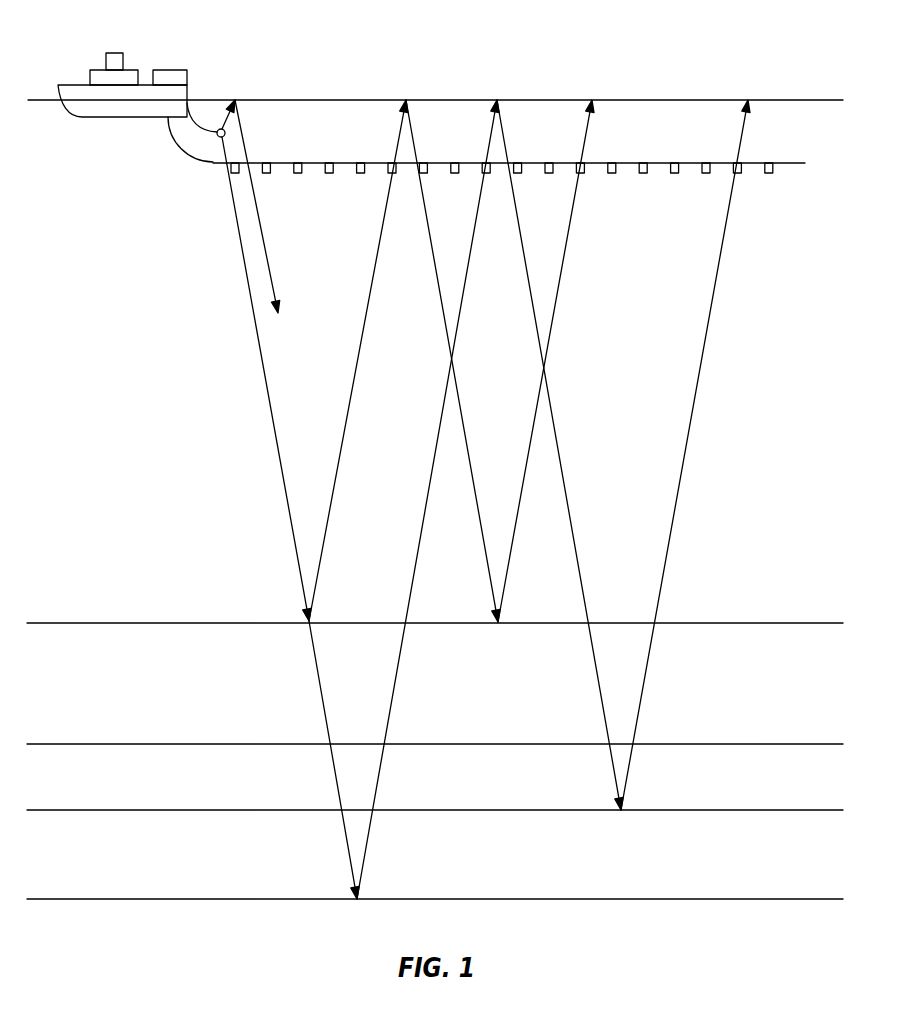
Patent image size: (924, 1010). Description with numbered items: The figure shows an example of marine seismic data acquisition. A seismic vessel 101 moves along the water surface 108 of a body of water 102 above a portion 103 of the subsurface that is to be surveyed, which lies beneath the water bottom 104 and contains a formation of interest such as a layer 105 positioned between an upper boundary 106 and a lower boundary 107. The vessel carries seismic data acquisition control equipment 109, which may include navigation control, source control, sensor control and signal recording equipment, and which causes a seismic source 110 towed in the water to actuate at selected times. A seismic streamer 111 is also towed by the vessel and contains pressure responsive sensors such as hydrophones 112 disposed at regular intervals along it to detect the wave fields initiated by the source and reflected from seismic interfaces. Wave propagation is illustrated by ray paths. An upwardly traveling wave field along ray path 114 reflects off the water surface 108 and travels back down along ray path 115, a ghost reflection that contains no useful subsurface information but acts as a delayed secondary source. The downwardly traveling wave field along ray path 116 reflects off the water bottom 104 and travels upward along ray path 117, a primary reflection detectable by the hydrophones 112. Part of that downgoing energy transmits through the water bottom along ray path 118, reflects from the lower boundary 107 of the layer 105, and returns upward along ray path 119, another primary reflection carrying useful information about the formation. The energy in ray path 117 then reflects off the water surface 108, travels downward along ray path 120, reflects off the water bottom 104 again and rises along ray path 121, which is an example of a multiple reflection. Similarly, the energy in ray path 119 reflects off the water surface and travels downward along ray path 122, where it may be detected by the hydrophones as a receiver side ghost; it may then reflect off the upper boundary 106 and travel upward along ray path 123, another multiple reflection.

The seismic vessel 101 is at (115, 53).
The body of water 102 is at (142, 367).
The portion of the subsurface 103 is at (165, 702).
The water bottom 104 is at (123, 623).
The layer 105 is at (533, 868).
The upper boundary 106 is at (123, 809).
The lower boundary 107 is at (123, 900).
The water surface 108 is at (531, 100).
The seismic data acquisition control equipment 109 is at (173, 70).
The seismic source 110 is at (219, 138).
The seismic streamer 111 is at (658, 163).
The hydrophones 112 is at (303, 163).
The ray path 114 is at (216, 128).
The ray path 115 is at (262, 230).
The ray path 116 is at (280, 470).
The ray path 117 is at (340, 470).
The ray path 118 is at (322, 707).
The ray path 119 is at (395, 707).
The ray path 120 is at (488, 578).
The ray path 121 is at (506, 578).
The ray path 122 is at (600, 707).
The ray path 123 is at (640, 707).